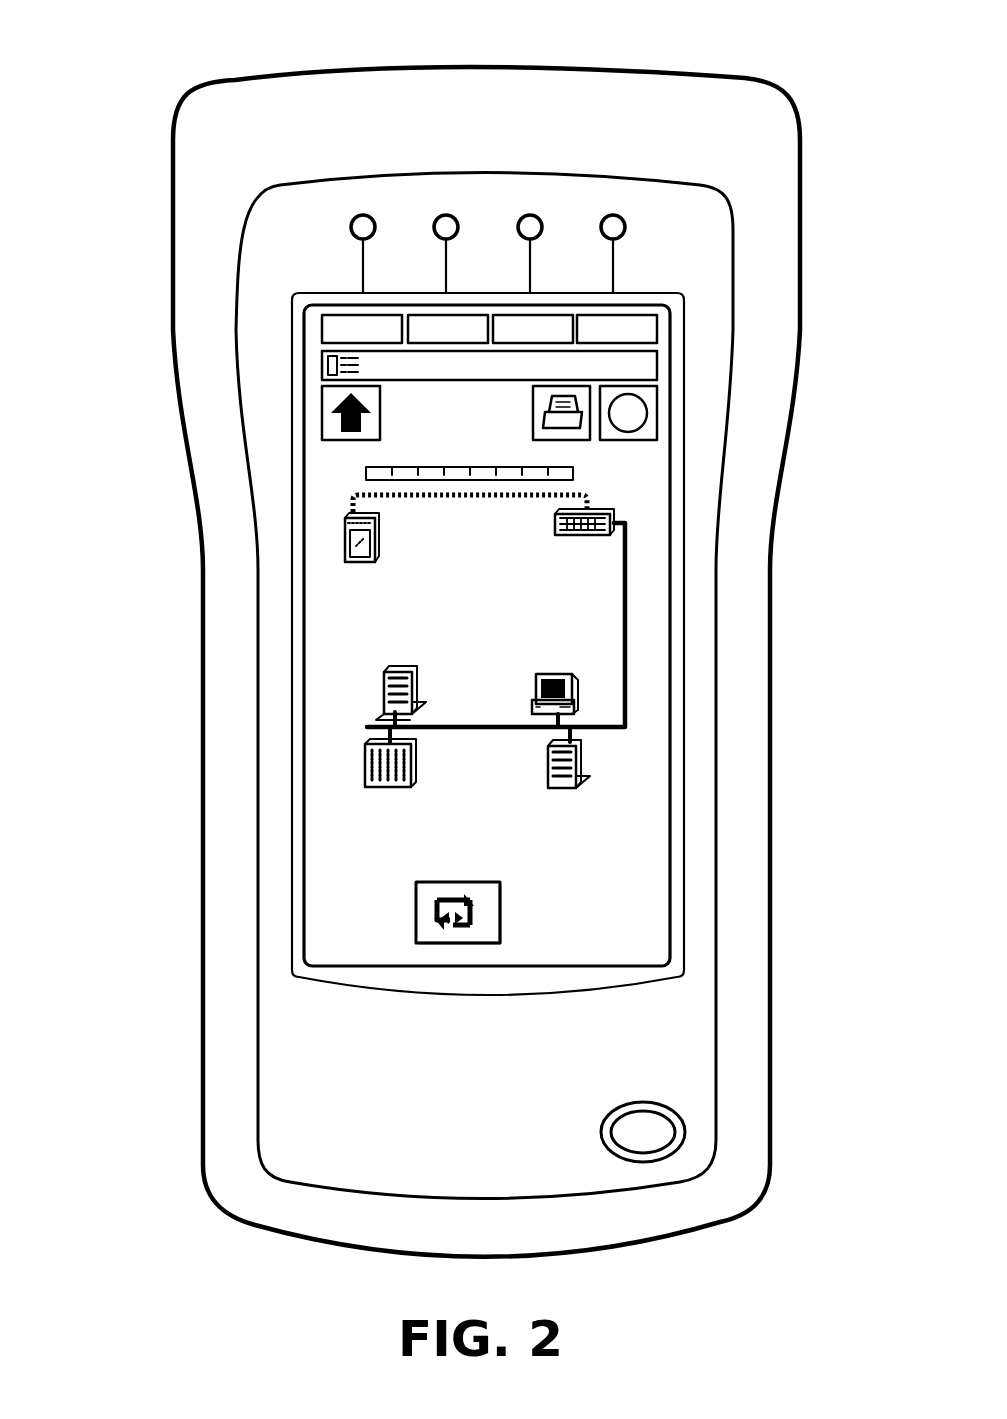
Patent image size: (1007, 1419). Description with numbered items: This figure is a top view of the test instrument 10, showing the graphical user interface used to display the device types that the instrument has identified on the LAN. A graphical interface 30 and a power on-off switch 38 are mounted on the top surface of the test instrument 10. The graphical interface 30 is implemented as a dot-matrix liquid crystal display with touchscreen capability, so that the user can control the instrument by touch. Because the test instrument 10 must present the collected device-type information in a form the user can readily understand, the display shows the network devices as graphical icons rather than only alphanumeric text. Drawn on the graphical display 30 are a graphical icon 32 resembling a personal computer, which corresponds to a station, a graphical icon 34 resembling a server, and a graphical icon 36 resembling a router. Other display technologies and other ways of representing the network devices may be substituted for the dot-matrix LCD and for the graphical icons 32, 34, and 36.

The test instrument 10 is at (632, 70).
The graphical interface 30 is at (467, 644).
The graphical icon 32 is at (585, 700).
The graphical icon 34 is at (381, 687).
The graphical icon 36 is at (362, 766).
The power on-off switch 38 is at (685, 1130).